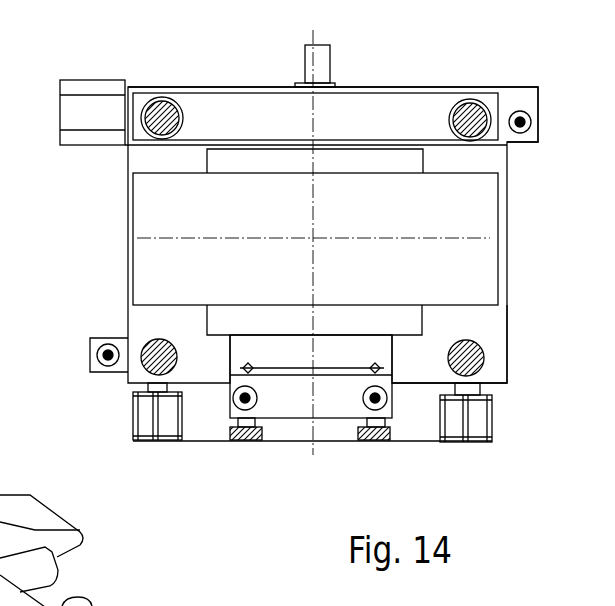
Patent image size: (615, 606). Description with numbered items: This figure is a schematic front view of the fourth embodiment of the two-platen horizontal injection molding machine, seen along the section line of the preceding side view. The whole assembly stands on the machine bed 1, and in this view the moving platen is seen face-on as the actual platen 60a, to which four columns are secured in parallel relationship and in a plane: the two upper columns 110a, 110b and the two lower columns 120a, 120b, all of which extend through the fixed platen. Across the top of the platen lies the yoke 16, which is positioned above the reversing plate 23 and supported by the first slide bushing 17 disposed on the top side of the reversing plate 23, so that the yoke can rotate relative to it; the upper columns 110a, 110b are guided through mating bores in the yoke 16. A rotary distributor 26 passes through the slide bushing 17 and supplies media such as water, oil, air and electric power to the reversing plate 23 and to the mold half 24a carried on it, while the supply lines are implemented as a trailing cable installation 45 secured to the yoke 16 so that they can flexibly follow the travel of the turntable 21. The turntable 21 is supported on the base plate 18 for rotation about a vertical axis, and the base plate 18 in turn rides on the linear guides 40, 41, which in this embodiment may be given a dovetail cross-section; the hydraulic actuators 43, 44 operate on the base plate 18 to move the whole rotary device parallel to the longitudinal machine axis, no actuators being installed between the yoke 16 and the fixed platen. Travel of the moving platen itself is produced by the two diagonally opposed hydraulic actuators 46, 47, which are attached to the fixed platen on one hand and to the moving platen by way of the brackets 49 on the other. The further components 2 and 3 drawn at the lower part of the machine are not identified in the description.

The machine bed 1 is at (5, 404).
The foot 2 is at (152, 442).
The spacer 3 is at (162, 387).
The yoke 16 is at (247, 112).
The first slide bushing 17 is at (300, 148).
The base plate 18 is at (328, 402).
The turntable 21 is at (378, 347).
The reversing plate 23 is at (385, 158).
The mold half 24a is at (437, 286).
The rotary distributor 26 is at (334, 65).
The linear guide 40 is at (247, 442).
The linear guide 41 is at (368, 440).
The hydraulic actuator 43 is at (233, 400).
The hydraulic actuator 44 is at (388, 403).
The trailing cable installation 45 is at (68, 110).
The hydraulic actuator 46 is at (532, 121).
The hydraulic actuator 47 is at (103, 343).
The bracket 49 is at (527, 98).
The actual platen 60a is at (483, 323).
The column 110a is at (166, 108).
The column 110b is at (470, 107).
The column 120a is at (160, 340).
The column 120b is at (488, 358).